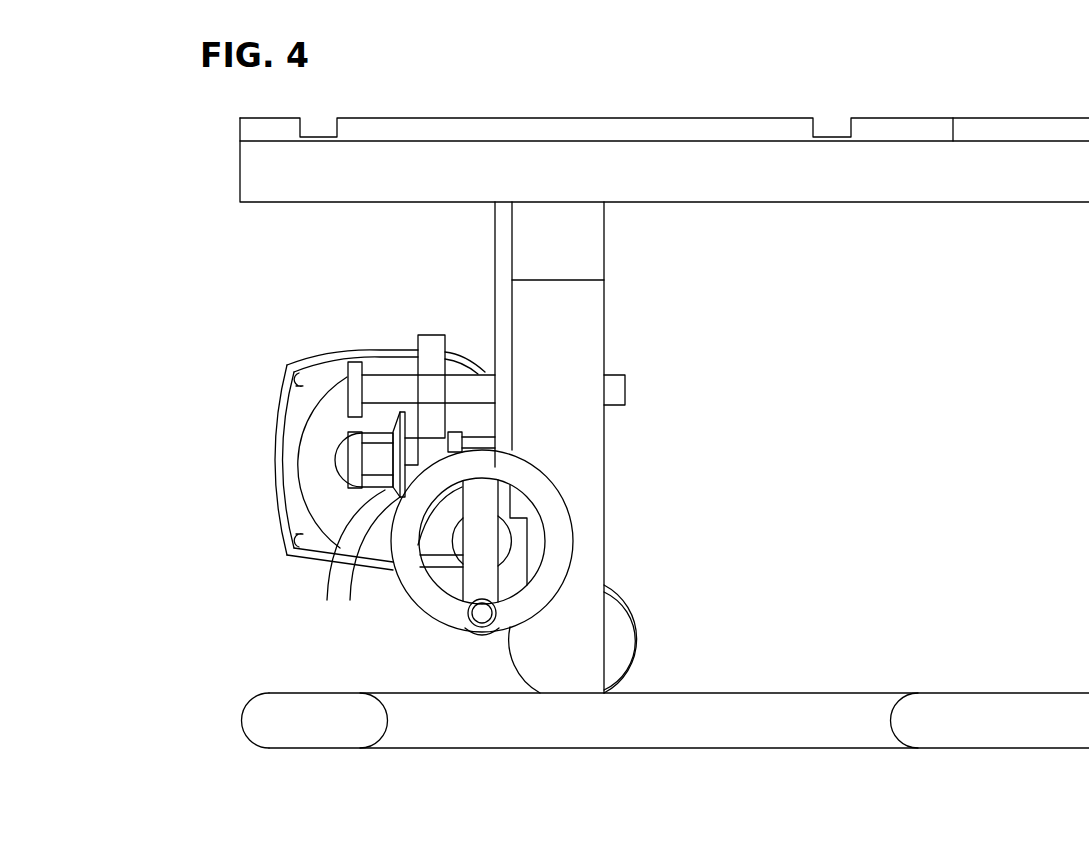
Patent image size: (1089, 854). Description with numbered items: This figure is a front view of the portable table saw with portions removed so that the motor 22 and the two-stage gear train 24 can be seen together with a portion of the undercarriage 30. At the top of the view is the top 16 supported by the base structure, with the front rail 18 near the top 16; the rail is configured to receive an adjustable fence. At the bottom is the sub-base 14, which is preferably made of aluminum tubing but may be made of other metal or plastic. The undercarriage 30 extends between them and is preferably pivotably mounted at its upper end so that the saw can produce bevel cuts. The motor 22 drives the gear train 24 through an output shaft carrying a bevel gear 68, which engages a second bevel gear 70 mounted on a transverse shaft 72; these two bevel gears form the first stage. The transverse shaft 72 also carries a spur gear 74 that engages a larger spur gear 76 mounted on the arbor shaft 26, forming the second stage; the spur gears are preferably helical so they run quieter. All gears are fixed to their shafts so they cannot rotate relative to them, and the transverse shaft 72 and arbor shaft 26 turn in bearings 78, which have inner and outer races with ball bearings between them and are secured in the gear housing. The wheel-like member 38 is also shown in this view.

The sub-base 14 is at (610, 728).
The top 16 is at (622, 110).
The front rail 18 is at (250, 178).
The motor 22 is at (322, 357).
The gear train 24 is at (332, 420).
The arbor shaft 26 is at (488, 386).
The undercarriage 30 is at (605, 345).
The wheel 38 is at (560, 540).
The bevel gear 68 is at (335, 553).
The second bevel gear 70 is at (345, 588).
The transverse shaft 72 is at (360, 455).
The spur gear 74 is at (427, 428).
The larger spur gear 76 is at (431, 335).
The bearings 78 is at (354, 362).